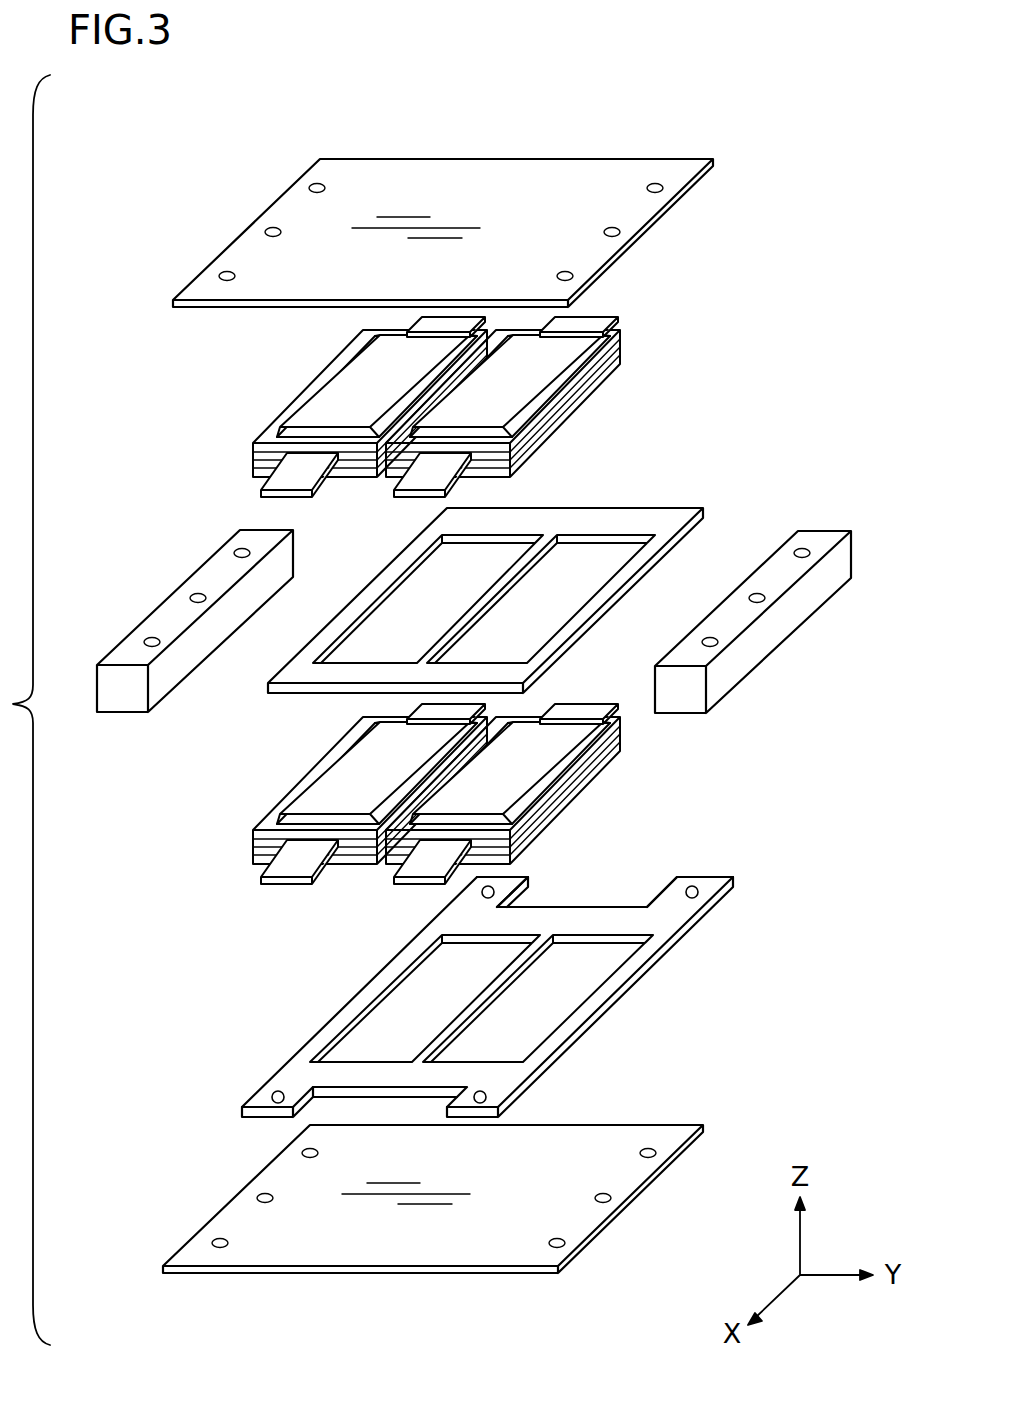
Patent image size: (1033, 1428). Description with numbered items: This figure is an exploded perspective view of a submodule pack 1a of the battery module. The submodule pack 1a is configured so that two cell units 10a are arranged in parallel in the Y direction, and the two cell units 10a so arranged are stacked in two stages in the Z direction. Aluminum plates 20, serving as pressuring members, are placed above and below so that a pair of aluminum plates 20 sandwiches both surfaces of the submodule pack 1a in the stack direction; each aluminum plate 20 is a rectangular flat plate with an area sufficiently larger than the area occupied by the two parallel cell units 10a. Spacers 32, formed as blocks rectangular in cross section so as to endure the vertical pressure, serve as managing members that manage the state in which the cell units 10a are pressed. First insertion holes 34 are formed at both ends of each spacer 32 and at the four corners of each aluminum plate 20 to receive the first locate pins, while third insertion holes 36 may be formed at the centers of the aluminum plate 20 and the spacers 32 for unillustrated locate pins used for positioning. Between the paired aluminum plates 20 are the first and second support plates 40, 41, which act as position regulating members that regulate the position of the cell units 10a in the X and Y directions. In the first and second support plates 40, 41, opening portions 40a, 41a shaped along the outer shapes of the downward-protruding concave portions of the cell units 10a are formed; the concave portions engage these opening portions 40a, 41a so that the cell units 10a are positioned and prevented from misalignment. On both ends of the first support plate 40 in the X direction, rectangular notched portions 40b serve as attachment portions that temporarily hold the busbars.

The submodule pack 1a is at (156, 468).
The cell unit 10a is at (478, 387).
The aluminum plate 20 is at (585, 180).
The spacer 32 is at (135, 692).
The first insertion hole 34 is at (318, 183).
The third insertion hole 36 is at (273, 227).
The first support plate 40 is at (385, 982).
The opening portion 40a is at (600, 981).
The rectangular notched portion 40b is at (653, 898).
The second support plate 41 is at (652, 512).
The opening portion 41a is at (618, 576).